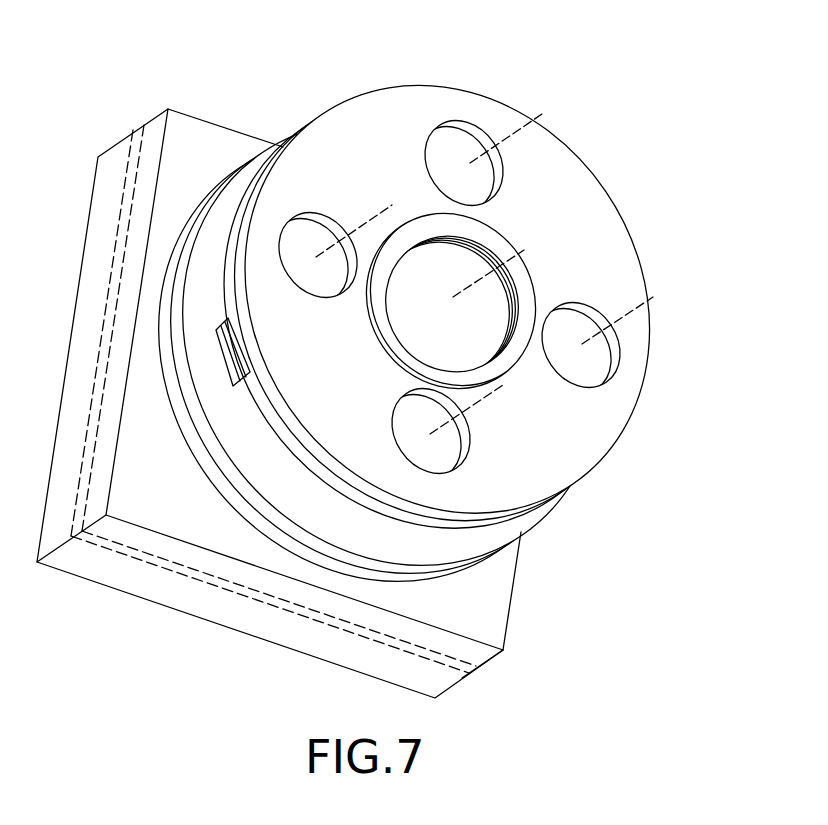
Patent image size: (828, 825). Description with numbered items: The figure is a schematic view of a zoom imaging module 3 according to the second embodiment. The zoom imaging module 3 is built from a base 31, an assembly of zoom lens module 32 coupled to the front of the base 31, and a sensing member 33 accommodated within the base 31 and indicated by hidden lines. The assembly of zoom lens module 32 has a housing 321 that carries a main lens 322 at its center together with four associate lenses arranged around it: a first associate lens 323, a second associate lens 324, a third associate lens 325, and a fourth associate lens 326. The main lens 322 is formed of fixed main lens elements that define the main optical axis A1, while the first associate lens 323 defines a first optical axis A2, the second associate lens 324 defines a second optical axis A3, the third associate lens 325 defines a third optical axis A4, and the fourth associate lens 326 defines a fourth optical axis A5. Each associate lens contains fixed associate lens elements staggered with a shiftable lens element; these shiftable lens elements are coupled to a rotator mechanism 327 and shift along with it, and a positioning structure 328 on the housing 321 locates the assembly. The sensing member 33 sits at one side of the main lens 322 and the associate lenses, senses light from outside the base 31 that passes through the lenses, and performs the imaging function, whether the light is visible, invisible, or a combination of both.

The zoom imaging module 3 is at (664, 128).
The base 31 is at (279, 390).
The assembly of zoom lens module 32 is at (402, 82).
The housing 321 is at (313, 118).
The main lens 322 is at (406, 293).
The first associate lens 323 is at (451, 153).
The second associate lens 324 is at (317, 274).
The third associate lens 325 is at (409, 426).
The fourth associate lens 326 is at (584, 369).
The rotator mechanism 327 is at (200, 257).
The positioning structure 328 is at (230, 352).
The sensing member 33 is at (115, 260).
The main optical axis A1 is at (503, 266).
The first optical axis A2 is at (522, 132).
The second optical axis A3 is at (367, 224).
The third optical axis A4 is at (480, 404).
The fourth optical axis A5 is at (632, 315).